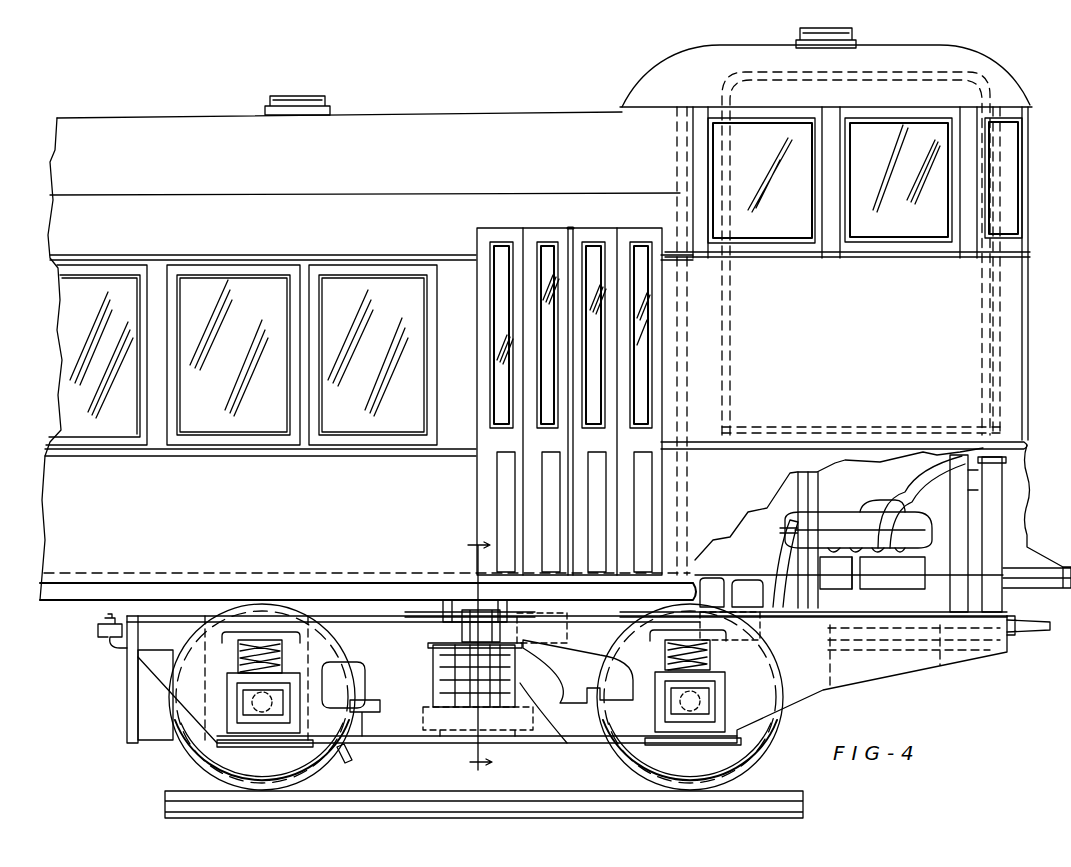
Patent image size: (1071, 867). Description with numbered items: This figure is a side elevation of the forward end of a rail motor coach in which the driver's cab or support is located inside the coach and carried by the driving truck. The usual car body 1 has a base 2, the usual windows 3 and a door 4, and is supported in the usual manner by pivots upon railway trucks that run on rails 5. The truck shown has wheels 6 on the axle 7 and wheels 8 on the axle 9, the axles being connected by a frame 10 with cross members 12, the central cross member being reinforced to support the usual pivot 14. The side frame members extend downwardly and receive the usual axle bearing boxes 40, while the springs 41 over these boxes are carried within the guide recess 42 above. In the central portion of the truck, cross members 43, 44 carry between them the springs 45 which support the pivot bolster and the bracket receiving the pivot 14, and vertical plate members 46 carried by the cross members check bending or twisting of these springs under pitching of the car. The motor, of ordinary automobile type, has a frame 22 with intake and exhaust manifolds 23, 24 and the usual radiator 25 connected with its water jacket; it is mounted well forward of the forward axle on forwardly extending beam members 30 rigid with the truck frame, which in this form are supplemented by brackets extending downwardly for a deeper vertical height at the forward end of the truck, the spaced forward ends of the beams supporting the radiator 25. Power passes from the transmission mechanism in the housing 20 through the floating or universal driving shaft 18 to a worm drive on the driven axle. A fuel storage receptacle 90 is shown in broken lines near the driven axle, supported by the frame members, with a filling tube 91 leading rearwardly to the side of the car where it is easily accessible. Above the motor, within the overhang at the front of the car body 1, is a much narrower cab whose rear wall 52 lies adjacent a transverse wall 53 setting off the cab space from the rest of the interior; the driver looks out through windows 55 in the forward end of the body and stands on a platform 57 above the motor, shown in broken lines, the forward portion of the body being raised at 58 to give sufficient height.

The car body 1 is at (533, 348).
The base 2 is at (112, 597).
The windows 3 is at (408, 362).
The doors 4 is at (645, 336).
The rails 5 is at (772, 790).
The wheels 6 is at (170, 770).
The axle 7 is at (272, 735).
The wheels 8 is at (790, 722).
The axle 9 is at (700, 725).
The truck frame 10 is at (398, 742).
The cross members 12 is at (128, 660).
The pivot 14 is at (470, 612).
The floating or universal shaft 18 is at (354, 680).
The housing 20 is at (580, 668).
The motor frame 22 is at (905, 606).
The intake manifold 23 is at (872, 573).
The exhaust manifold 24 is at (862, 520).
The radiator 25 is at (1000, 483).
The beam members 30 is at (950, 660).
The axle bearing boxes 40 is at (257, 733).
The springs 41 is at (287, 643).
The guide recess 42 is at (245, 641).
The cross member 43 is at (515, 732).
The cross member 44 is at (415, 612).
The springs 45 is at (433, 682).
The vertical plate members 46 is at (567, 743).
The rear wall 52 is at (728, 389).
The transverse wall 53 is at (690, 360).
The windows 55 is at (847, 273).
The platform 57 is at (838, 428).
The raised forward portion 58 is at (692, 60).
The fuel storage receptacle 90 is at (138, 733).
The filling tube 91 is at (96, 642).